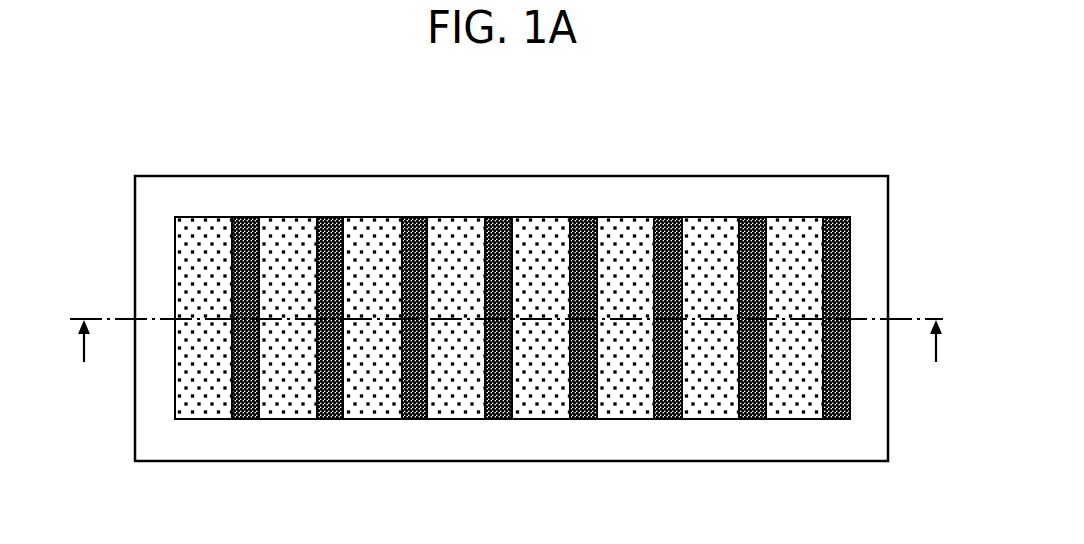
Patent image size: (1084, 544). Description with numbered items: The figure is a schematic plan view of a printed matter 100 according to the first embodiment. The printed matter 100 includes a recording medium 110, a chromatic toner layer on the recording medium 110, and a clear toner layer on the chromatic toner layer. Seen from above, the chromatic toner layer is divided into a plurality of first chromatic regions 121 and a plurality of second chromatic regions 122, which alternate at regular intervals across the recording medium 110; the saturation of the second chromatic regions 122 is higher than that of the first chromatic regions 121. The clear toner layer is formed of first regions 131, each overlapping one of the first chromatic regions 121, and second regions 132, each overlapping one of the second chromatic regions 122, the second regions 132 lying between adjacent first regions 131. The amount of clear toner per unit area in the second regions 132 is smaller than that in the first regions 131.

The printed matter 100 is at (506, 300).
The recording medium 110 is at (415, 175).
The first region 131 is at (499, 265).
The first chromatic region 121 is at (540, 232).
The second region 132 is at (541, 373).
The second chromatic region 122 is at (585, 405).